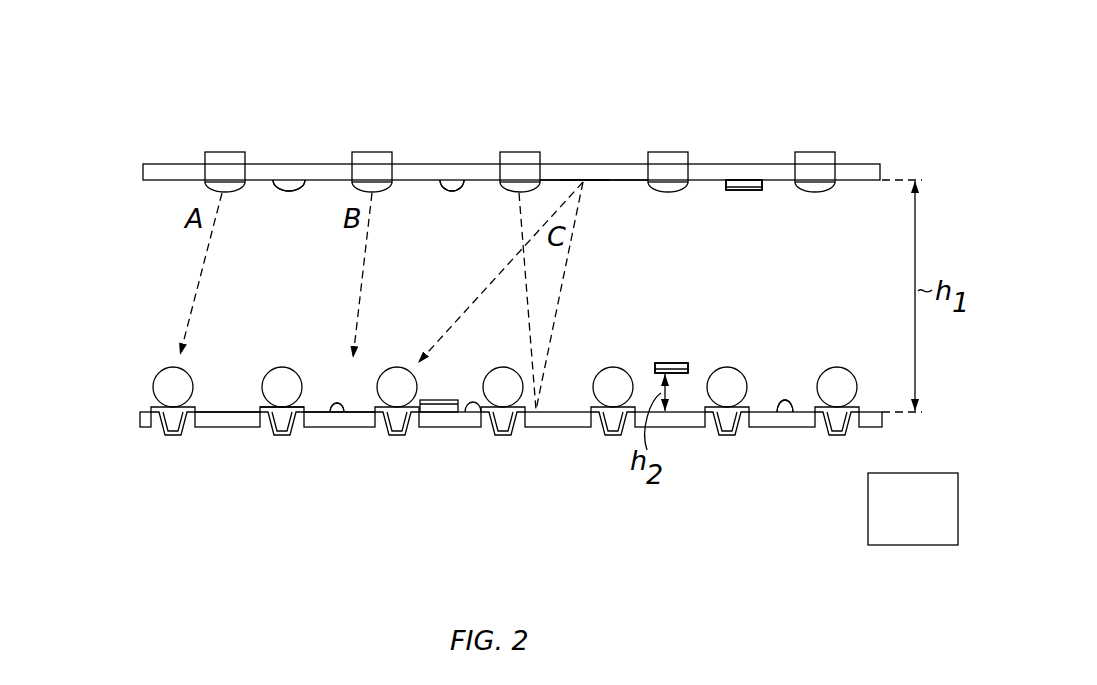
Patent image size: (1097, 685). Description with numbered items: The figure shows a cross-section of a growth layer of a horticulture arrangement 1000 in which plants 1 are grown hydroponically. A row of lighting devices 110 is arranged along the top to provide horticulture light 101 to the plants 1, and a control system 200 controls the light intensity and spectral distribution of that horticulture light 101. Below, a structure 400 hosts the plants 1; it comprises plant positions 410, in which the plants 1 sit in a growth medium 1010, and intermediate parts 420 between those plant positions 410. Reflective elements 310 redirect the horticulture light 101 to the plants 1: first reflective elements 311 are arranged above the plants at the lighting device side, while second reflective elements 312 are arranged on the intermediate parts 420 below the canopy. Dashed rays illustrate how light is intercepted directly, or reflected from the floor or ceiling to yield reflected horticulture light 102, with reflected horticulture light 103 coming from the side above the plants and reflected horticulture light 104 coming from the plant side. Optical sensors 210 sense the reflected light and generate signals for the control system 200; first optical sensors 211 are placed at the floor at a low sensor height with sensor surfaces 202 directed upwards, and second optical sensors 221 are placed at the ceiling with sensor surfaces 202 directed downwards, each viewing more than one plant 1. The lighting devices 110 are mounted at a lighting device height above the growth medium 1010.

The horticulture arrangement 1000 is at (845, 104).
The lighting device 110 is at (203, 153).
The reflective element 310 is at (297, 163).
The first reflective element 311 is at (415, 146).
The second reflective element 312 is at (598, 438).
The reflected horticulture light 102 is at (565, 198).
The reflected horticulture light 103 is at (650, 127).
The reflected horticulture light 104 is at (314, 476).
The sensor surface 202 is at (745, 180).
The optical sensor 210 is at (762, 198).
The first optical sensor 211 is at (714, 330).
The second optical sensor 221 is at (789, 240).
The horticulture light 101 is at (197, 280).
The plant 1 is at (157, 362).
The structure 400 is at (143, 393).
The intermediate part 420 is at (222, 395).
The plant position 410 is at (187, 438).
The growth medium 1010 is at (170, 422).
The control system 200 is at (915, 549).